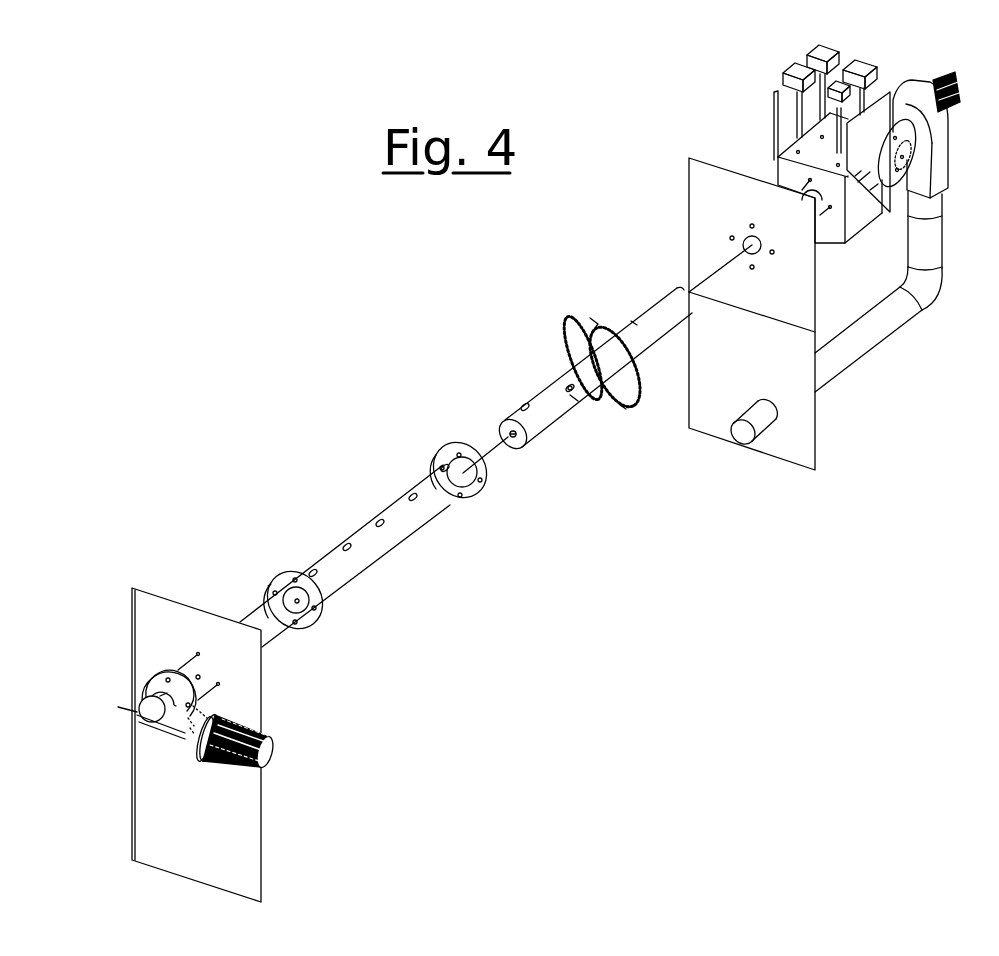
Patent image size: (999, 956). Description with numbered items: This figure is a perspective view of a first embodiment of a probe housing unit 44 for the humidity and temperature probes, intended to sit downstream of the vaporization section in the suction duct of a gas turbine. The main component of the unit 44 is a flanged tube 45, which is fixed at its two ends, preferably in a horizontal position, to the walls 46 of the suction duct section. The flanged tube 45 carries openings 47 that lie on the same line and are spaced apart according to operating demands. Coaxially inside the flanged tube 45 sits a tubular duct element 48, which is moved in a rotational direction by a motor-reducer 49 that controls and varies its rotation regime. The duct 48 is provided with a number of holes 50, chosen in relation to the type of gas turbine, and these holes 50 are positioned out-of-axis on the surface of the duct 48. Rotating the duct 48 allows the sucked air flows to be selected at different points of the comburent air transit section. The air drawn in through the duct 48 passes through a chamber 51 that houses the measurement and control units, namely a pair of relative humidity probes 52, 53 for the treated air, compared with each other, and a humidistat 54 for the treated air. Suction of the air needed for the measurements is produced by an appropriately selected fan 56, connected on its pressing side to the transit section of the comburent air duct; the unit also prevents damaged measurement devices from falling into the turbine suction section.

The housing unit 44 is at (464, 335).
The flanged tube 45 is at (412, 522).
The walls 46 is at (153, 610).
The openings 47 is at (413, 496).
The tubular duct element 48 is at (545, 413).
The motor-reducer 49 is at (262, 733).
The holes 50 is at (568, 386).
The chamber 51 is at (853, 223).
The relative humidity probe 52 is at (820, 50).
The relative humidity probe 53 is at (784, 71).
The humidistat 54 is at (871, 65).
The fan 56 is at (918, 88).